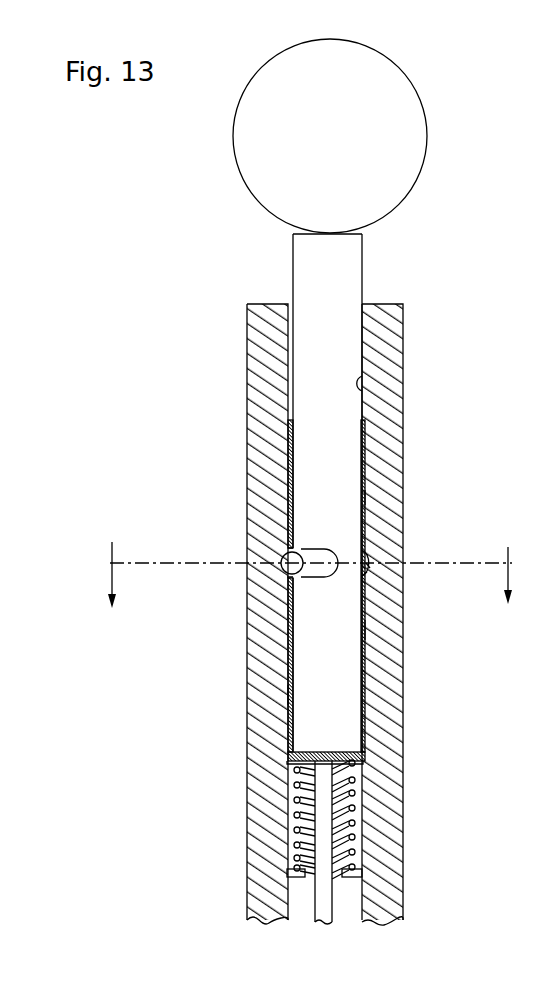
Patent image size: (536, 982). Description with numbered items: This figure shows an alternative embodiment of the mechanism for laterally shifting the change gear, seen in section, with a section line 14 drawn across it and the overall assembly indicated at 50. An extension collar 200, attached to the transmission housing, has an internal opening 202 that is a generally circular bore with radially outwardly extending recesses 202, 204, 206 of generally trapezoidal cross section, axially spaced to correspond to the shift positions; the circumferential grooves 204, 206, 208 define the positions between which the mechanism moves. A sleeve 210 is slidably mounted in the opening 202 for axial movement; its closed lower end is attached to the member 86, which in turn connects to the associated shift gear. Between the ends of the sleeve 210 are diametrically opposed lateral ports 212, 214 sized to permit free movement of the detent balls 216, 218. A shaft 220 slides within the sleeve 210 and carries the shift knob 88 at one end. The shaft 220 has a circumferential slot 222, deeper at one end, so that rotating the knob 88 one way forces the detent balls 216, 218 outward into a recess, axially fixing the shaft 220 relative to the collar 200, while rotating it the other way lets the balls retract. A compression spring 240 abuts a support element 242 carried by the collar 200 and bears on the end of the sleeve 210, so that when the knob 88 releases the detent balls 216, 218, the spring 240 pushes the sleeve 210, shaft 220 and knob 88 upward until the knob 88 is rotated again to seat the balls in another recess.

The shift knob 88 is at (413, 127).
The shaft 220 is at (345, 263).
The extension collar 200 is at (384, 350).
The internal opening 202 is at (360, 390).
The recess 204 is at (371, 497).
The recess 206 is at (368, 560).
The detent ball 218 is at (367, 572).
The lateral port 214 is at (370, 568).
The circumferential groove 208 is at (372, 628).
The sleeve 210 is at (287, 695).
The circumferential slot 222 is at (283, 555).
The detent ball 216 is at (300, 549).
The lateral port 212 is at (289, 575).
The compression spring 240 is at (350, 805).
The support element 242 is at (292, 871).
The member 86 is at (328, 895).
The section line 14- 14 is at (309, 593).
The handle assembly 50 is at (248, 446).